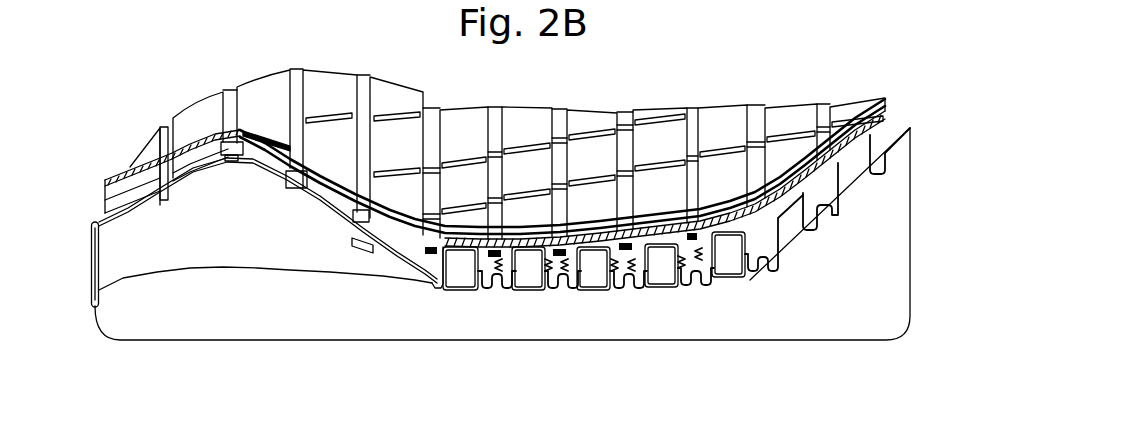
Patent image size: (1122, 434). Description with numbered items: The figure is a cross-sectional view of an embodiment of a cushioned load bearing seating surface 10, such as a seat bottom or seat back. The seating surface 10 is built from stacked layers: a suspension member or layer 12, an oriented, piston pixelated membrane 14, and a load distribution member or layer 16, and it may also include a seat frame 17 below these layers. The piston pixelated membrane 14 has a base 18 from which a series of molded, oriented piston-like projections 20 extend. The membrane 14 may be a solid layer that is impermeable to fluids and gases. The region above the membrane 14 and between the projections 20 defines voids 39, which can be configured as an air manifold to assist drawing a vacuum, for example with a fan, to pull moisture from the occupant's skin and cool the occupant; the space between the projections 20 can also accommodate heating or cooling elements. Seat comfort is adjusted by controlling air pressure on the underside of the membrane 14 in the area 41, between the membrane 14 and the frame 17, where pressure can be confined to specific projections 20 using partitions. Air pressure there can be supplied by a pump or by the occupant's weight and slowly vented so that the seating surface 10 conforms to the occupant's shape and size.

The cushioned load bearing seating surface 10 is at (800, 85).
The suspension member or layer 12 is at (115, 180).
The oriented, piston pixelated membrane 14 is at (444, 284).
The load distribution member or layer 16 is at (587, 122).
The seat frame 17 is at (911, 238).
The base 18 is at (385, 255).
The piston-like projections 20 is at (594, 313).
The voids 39 is at (420, 258).
The area on the underside of the piston pixelated layer 41 is at (644, 268).